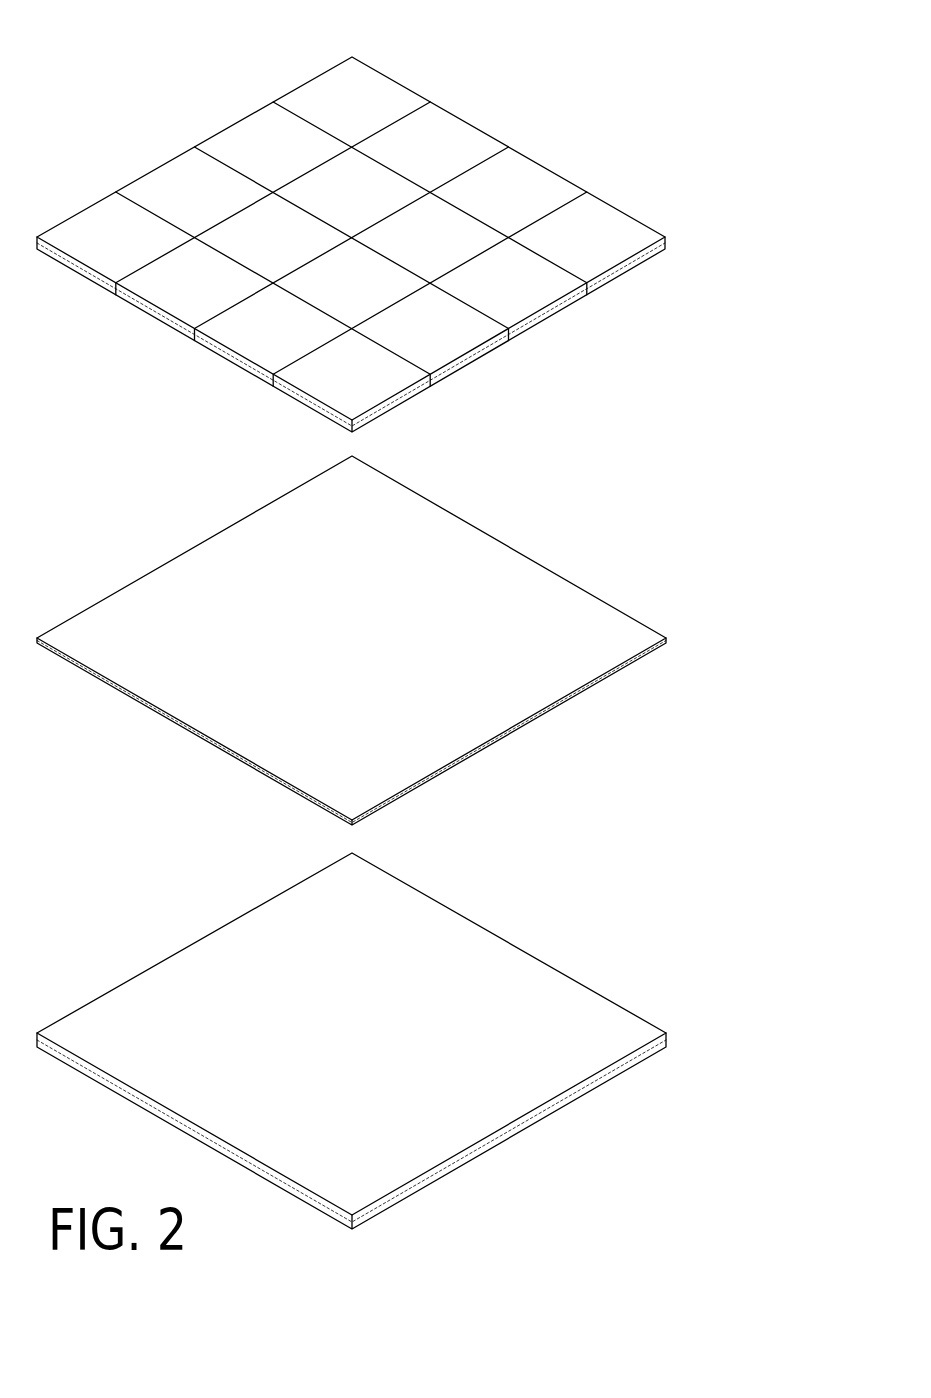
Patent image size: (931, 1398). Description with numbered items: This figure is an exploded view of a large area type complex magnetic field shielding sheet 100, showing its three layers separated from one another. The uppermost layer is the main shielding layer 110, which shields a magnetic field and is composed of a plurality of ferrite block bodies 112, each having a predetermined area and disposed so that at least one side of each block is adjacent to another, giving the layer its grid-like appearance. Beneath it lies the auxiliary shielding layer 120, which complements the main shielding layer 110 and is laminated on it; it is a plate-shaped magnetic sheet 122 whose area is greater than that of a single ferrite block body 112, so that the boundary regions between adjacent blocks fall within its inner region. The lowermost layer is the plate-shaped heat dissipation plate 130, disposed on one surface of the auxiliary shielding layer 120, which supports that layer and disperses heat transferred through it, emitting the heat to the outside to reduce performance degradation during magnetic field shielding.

The large area type complex magnetic field shielding sheet 100 is at (83, 38).
The main shielding layer 110 is at (414, 244).
The ferrite block bodies 112 is at (515, 173).
The auxiliary shielding layer 120 is at (415, 640).
The plate-shaped magnetic sheet 122 is at (531, 580).
The heat dissipation plate 130 is at (690, 1047).